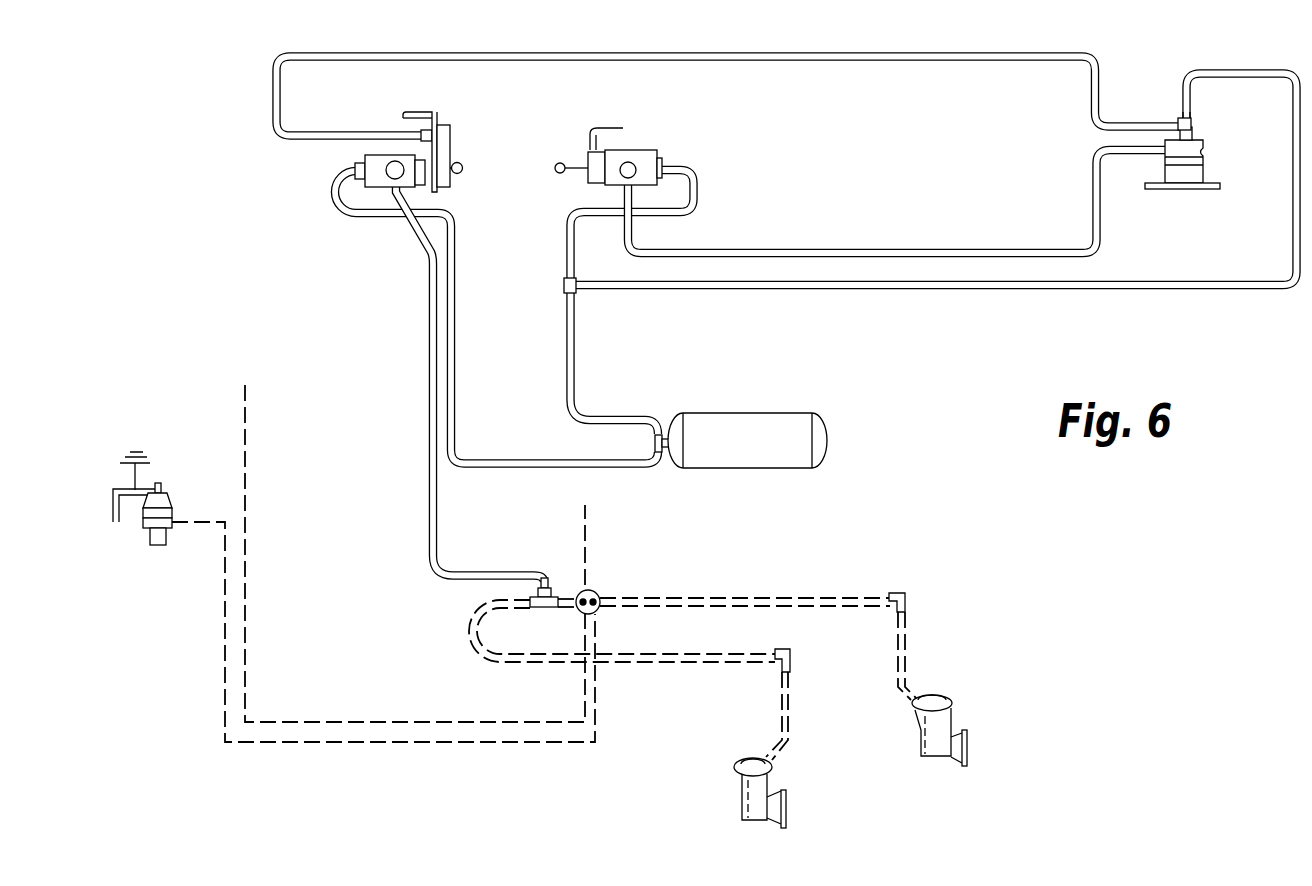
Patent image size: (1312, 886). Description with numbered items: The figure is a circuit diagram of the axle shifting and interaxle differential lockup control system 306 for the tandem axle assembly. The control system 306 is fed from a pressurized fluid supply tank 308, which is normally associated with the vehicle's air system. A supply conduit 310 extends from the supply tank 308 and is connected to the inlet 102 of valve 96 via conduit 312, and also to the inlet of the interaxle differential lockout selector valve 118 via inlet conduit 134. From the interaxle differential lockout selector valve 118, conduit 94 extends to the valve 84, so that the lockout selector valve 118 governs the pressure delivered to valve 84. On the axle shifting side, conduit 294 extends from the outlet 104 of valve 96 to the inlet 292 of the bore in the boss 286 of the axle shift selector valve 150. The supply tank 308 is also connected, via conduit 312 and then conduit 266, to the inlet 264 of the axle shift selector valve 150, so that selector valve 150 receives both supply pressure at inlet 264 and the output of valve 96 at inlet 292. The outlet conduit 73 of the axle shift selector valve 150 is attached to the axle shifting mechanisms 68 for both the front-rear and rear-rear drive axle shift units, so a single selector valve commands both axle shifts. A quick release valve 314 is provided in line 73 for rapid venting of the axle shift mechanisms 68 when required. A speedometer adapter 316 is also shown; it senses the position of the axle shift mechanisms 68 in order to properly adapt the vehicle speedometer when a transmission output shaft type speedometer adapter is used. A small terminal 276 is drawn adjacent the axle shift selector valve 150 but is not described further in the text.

The conduit 294 is at (710, 61).
The conduit 312 is at (1292, 222).
The control system 306 is at (1082, 294).
The conduit 266 is at (456, 336).
The inlet conduit 134 is at (697, 187).
The supply conduit 310 is at (565, 390).
The conduit 94 is at (718, 251).
The outlet conduit 73 is at (430, 478).
The inlet 292 is at (424, 133).
The quick release valve 314 is at (558, 613).
The inlet 264 is at (358, 166).
The axle shift selector valve 150 is at (438, 103).
The boss 286 is at (443, 140).
The electrical terminal 276 is at (463, 173).
The interaxle differential lockout selector valve 118 is at (637, 146).
The valve 84 is at (1216, 163).
The valve 96 is at (1200, 129).
The outlet 104 is at (1178, 121).
The inlet 102 is at (1191, 112).
The pressurized fluid supply tank 308 is at (828, 442).
The speedometer adapter 316 is at (176, 493).
The axle shifting mechanisms 68 is at (960, 721).